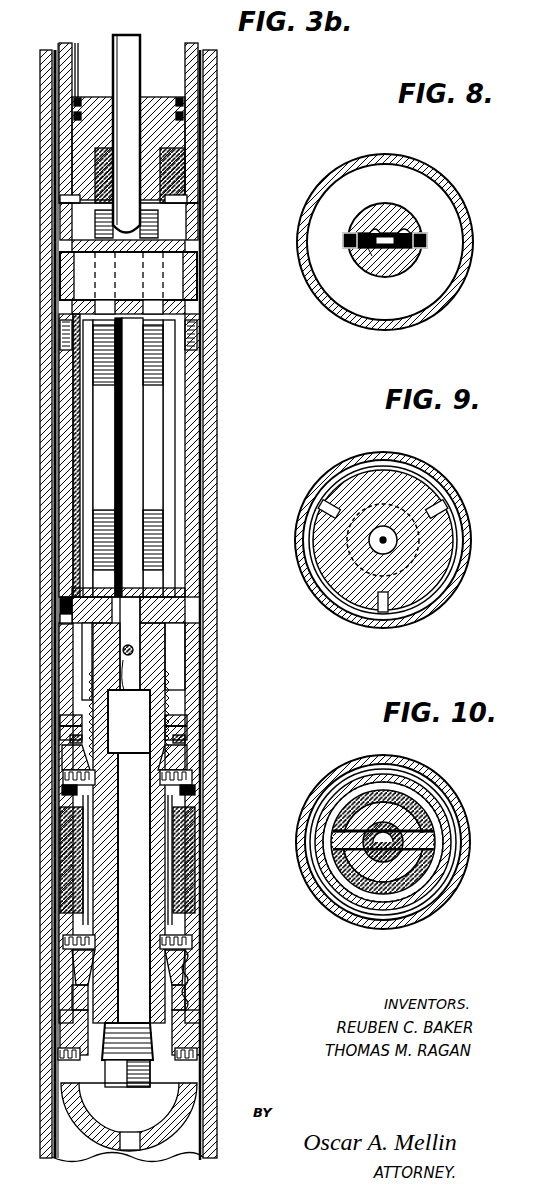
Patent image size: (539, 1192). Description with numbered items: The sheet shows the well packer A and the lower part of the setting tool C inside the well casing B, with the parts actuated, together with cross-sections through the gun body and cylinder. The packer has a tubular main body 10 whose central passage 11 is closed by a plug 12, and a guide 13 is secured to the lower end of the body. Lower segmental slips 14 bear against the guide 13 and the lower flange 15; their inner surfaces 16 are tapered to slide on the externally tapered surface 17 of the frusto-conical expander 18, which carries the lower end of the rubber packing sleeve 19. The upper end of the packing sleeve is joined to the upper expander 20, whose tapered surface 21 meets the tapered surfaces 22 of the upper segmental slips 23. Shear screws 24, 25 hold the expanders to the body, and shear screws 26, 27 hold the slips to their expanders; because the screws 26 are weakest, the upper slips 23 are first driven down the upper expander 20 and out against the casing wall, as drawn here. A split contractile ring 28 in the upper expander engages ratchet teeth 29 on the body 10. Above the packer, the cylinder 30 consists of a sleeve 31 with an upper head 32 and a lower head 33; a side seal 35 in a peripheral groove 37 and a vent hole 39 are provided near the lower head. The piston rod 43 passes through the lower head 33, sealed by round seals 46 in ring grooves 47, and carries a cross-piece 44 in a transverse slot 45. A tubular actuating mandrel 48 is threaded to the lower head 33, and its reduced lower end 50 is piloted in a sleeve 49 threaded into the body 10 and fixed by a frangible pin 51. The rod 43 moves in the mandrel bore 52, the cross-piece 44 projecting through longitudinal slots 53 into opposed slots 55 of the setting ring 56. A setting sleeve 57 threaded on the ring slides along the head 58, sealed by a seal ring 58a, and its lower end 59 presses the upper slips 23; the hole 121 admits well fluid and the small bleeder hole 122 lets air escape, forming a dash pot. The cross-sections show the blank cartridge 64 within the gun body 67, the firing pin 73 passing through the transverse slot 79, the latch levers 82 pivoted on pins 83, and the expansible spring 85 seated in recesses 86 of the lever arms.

In FIG. 3B, the well packer A is at (55, 906).
In FIG. 3B, the well casing B is at (213, 692).
In FIG. 8, the well casing B is at (462, 190).
In FIG. 9, the well casing B is at (465, 510).
In FIG. 10, the well casing B is at (466, 810).
In FIG. 3B, the setting tool C is at (205, 352).
In FIG. 3B, the tubular main body 10 is at (160, 903).
In FIG. 3B, the central passage 11 is at (137, 888).
In FIG. 3B, the plug 12 is at (118, 1080).
In FIG. 3B, the guide 13 is at (160, 1140).
In FIG. 3B, the lower segmental slips 14 is at (195, 1010).
In FIG. 3B, the lower abutment or flange 15 is at (190, 1053).
In FIG. 3B, the inner surfaces 16 is at (200, 1000).
In FIG. 3B, the externally tapered surface 17 is at (195, 965).
In FIG. 3B, the frusto-conical expander 18 is at (175, 960).
In FIG. 3B, the packing sleeve 19 is at (185, 868).
In FIG. 3B, the upper expander 20 is at (193, 800).
In FIG. 3B, the externally tapered surface 21 is at (129, 721).
In FIG. 3B, the tapered surfaces 22 is at (68, 760).
In FIG. 3B, the upper segmental slips 23 is at (185, 742).
In FIG. 3B, the shear screws 24 is at (195, 781).
In FIG. 3B, the shear screws 25 is at (188, 943).
In FIG. 3B, the shear screws 26 is at (190, 763).
In FIG. 3B, the shear screws 27 is at (196, 976).
In FIG. 3B, the split contractile ring 28 is at (165, 772).
In FIG. 3B, the circular ratchet teeth 29 is at (58, 730).
In FIG. 3B, the cylinder 30 is at (205, 70).
In FIG. 3B, the cylindrical sleeve 31 is at (190, 98).
In FIG. 9, the upper head 32 is at (410, 485).
In FIG. 3B, the lower head 33 is at (190, 172).
In FIG. 3B, the side seal 35 is at (185, 117).
In FIG. 3B, the peripheral groove 37 is at (192, 122).
In FIG. 3B, the lower vent hole 39 is at (200, 148).
In FIG. 3B, the piston rod 43 is at (143, 45).
In FIG. 10, the piston rod 43 is at (395, 870).
In FIG. 3B, the anvil or cross-piece 44 is at (172, 270).
In FIG. 10, the anvil or cross-piece 44 is at (440, 838).
In FIG. 3B, the transverse slot 45 is at (140, 254).
In FIG. 10, the transverse slot 45 is at (395, 826).
In FIG. 3B, the seals 46 is at (148, 106).
In FIG. 3B, the ring grooves 47 is at (100, 97).
In FIG. 3B, the tubular actuating mandrel 48 is at (165, 420).
In FIG. 10, the tubular actuating mandrel 48 is at (385, 875).
In FIG. 3B, the sleeve 49 is at (170, 652).
In FIG. 3B, the lower end of the mandrel 50 is at (170, 610).
In FIG. 3B, the frangible pin 51 is at (119, 696).
In FIG. 3B, the bore 52 is at (138, 462).
In FIG. 3B, the longitudinally extending slots 53 is at (155, 498).
In FIG. 10, the longitudinally extending slots 53 is at (340, 865).
In FIG. 3B, the opposed slots 55 is at (78, 262).
In FIG. 10, the opposed slots 55 is at (318, 842).
In FIG. 3B, the setting ring 56 is at (68, 331).
In FIG. 10, the setting ring 56 is at (388, 790).
In FIG. 3B, the setting sleeve or skirt 57 is at (60, 462).
In FIG. 10, the setting sleeve or skirt 57 is at (320, 862).
In FIG. 3B, the flange or head 58 is at (200, 592).
In FIG. 3B, the seal ring 58a is at (70, 612).
In FIG. 3B, the lower end 59 is at (200, 725).
In FIG. 9, the blank cartridge 64 is at (365, 548).
In FIG. 8, the gun body 67 is at (395, 275).
In FIG. 9, the gun body 67 is at (375, 508).
In FIG. 8, the firing pin 73 is at (390, 220).
In FIG. 8, the elongate transverse slot 79 is at (322, 248).
In FIG. 8, the latch levers 82 is at (432, 242).
In FIG. 8, the pins 83 is at (360, 270).
In FIG. 8, the expansible spring 85 is at (375, 222).
In FIG. 8, the recesses 86 is at (410, 224).
In FIG. 3B, the hole 121 is at (56, 620).
In FIG. 3B, the bleeder hole 122 is at (200, 440).